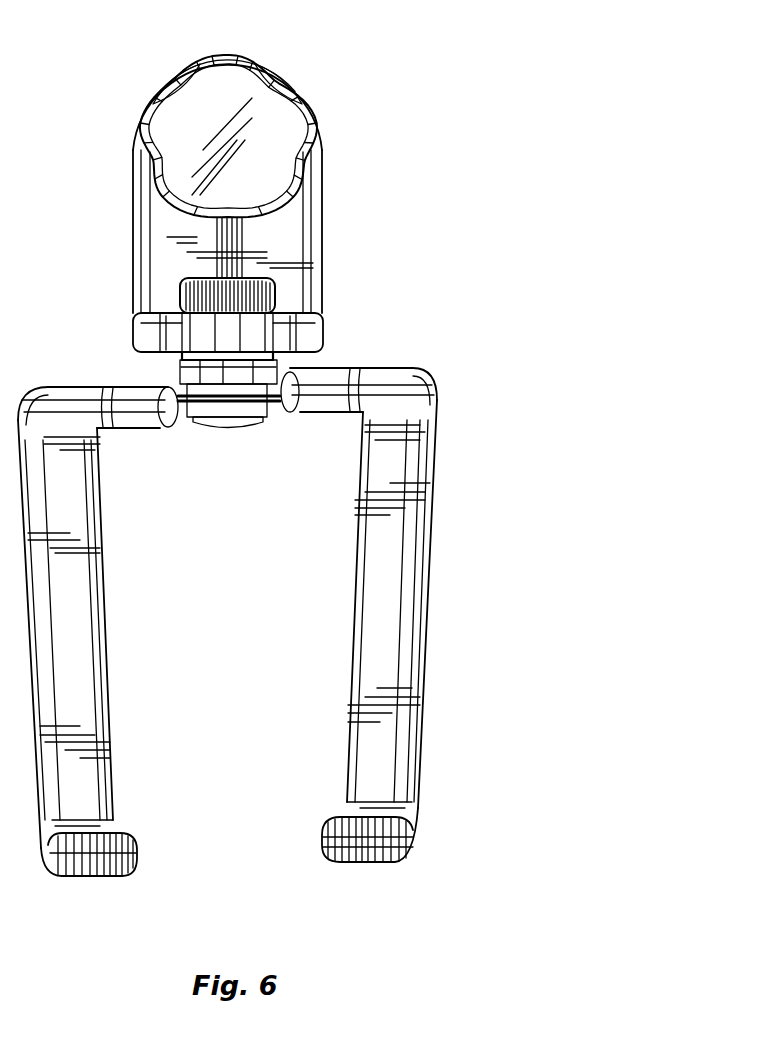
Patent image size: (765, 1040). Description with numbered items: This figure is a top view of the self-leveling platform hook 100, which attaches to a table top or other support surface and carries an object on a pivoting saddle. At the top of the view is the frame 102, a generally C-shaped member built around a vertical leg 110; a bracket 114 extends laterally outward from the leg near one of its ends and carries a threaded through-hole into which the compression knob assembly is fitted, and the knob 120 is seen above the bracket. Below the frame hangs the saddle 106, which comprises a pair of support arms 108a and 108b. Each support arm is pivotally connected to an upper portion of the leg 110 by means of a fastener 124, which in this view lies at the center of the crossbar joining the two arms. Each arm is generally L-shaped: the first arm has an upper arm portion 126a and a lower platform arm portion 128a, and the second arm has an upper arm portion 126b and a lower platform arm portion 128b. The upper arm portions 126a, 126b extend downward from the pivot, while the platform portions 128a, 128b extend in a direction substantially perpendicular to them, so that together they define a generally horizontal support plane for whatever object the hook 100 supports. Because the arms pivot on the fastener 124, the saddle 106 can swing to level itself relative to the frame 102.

The self-leveling platform hook 100 is at (508, 214).
The frame 102 is at (333, 205).
The saddle 106 is at (453, 518).
The support arm 108a is at (425, 472).
The support arm 108b is at (65, 492).
The vertical leg 110 is at (305, 338).
The bracket 114 is at (288, 248).
The knob 120 is at (263, 120).
The fastener 124 is at (160, 374).
The upper arm portion 126a is at (332, 405).
The upper arm portion 126b is at (142, 418).
The lower platform arm portion 128a is at (383, 612).
The lower platform arm portion 128b is at (77, 652).